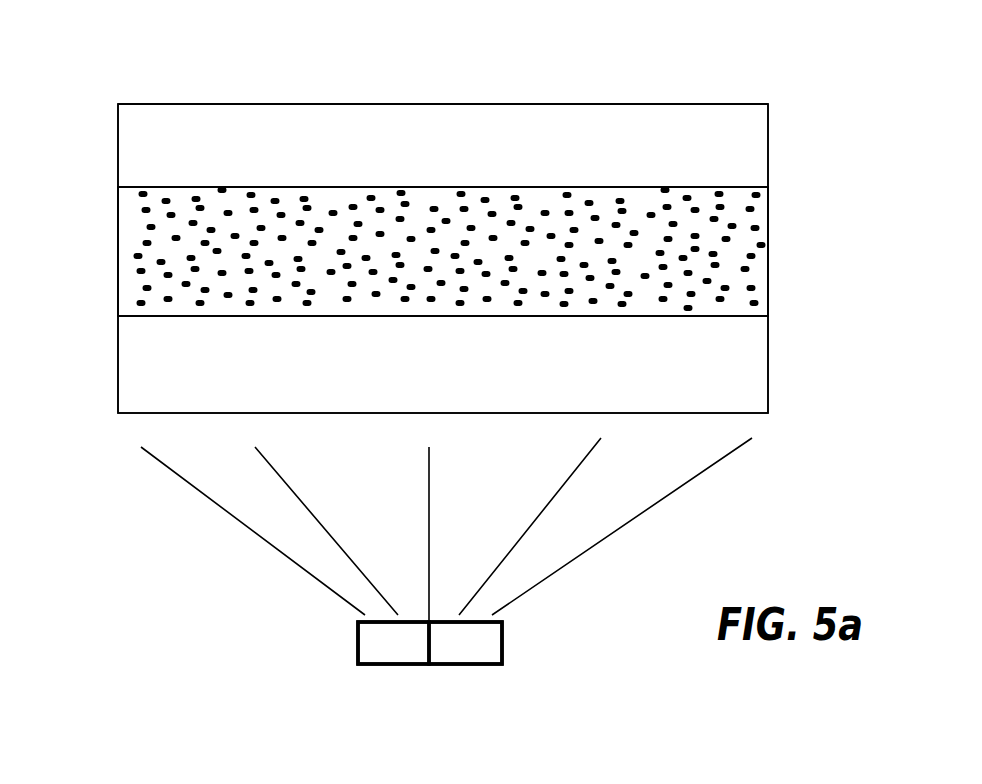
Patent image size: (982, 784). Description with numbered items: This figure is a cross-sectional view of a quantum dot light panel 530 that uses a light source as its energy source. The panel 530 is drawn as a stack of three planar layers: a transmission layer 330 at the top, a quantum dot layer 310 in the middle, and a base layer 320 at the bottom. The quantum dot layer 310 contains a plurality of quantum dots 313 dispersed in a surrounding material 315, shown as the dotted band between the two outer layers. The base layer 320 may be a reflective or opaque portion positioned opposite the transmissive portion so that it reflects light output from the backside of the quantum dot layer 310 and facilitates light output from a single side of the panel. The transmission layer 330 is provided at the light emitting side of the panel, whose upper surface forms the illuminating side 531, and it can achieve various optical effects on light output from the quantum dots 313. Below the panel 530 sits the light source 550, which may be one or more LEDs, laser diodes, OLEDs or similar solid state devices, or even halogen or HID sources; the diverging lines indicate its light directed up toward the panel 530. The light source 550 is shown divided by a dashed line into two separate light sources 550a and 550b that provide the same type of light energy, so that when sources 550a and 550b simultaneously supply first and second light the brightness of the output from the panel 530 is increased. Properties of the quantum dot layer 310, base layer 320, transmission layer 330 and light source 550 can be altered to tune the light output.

The QD light panel 530 is at (271, 44).
The illuminating side 531 is at (583, 104).
The transmission layer 330 is at (768, 138).
The quantum dot layer 310 is at (768, 239).
The base layer 320 is at (768, 354).
The surrounding material 315 is at (133, 218).
The quantum dots 313 is at (140, 272).
The light source 550 is at (502, 642).
The first light source 550a is at (390, 666).
The second light source 550b is at (465, 666).